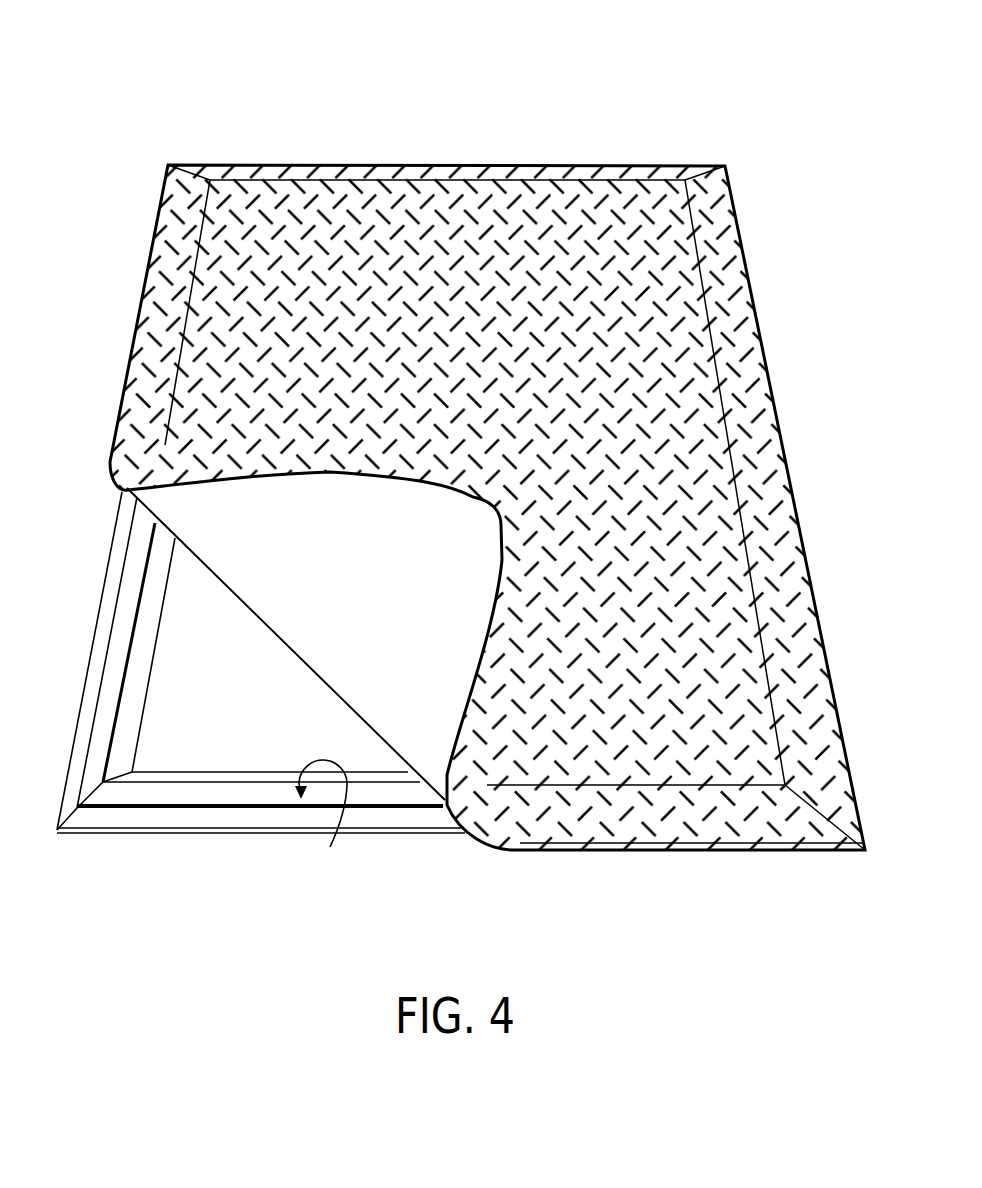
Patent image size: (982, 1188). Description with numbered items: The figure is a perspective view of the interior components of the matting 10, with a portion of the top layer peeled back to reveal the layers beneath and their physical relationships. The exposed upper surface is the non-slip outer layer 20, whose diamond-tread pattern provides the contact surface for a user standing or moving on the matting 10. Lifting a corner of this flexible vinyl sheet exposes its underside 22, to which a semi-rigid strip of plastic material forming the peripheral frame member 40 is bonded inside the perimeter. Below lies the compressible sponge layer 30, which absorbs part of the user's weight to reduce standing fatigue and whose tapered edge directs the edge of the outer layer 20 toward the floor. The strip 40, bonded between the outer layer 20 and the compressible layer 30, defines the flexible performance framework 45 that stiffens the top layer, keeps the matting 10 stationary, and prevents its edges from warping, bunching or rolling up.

The matting 10 is at (300, 113).
The non-slip outer layer 20 is at (543, 190).
The underside of the outer layer 22 is at (187, 508).
The compressible layer 30 is at (212, 817).
The peripheral frame member 40 is at (321, 820).
The flexible performance framework 45 is at (124, 812).